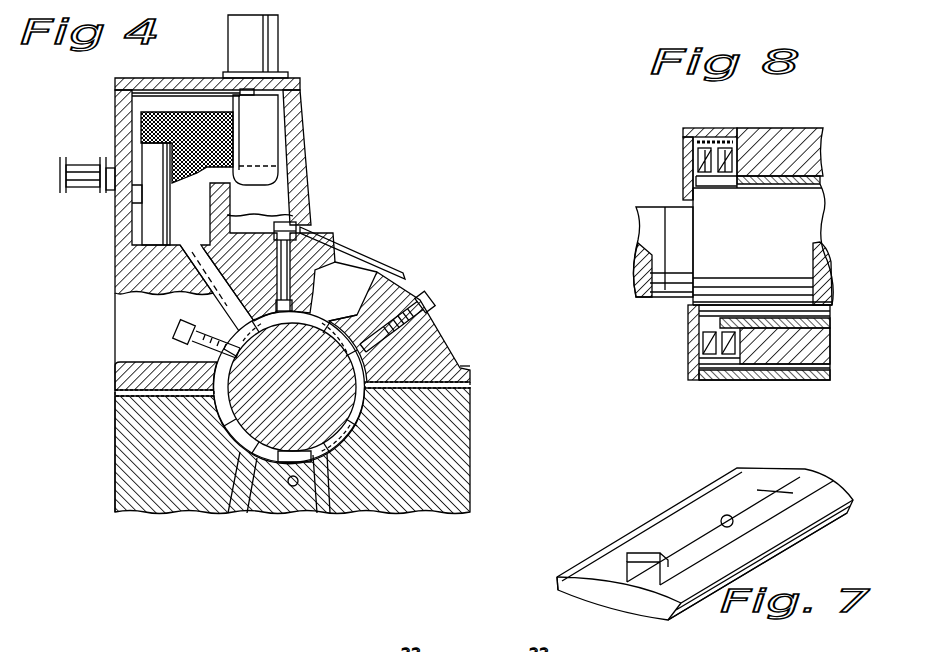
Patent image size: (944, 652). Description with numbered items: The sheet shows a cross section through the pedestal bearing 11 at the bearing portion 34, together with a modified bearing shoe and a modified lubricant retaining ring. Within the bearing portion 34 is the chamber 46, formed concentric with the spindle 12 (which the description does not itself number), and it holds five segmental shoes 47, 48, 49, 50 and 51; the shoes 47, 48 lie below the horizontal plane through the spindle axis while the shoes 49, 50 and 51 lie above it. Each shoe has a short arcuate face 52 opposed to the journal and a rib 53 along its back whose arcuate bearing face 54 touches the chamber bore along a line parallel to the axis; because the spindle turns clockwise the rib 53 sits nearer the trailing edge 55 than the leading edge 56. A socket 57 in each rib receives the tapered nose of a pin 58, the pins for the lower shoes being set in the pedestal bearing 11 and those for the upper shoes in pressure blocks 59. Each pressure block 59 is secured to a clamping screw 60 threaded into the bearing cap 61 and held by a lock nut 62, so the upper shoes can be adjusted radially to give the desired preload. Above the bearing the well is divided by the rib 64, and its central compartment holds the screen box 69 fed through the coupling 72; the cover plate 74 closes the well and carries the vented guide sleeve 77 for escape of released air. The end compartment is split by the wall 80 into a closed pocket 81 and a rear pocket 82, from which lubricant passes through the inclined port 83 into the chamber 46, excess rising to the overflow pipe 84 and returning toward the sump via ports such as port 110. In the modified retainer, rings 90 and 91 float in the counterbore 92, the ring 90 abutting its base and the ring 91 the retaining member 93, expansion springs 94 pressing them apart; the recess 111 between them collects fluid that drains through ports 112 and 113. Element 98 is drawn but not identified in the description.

In FIG. 4, the pedestal bearing 11 is at (468, 431).
In FIG. 4, the shaft 12 is at (318, 520).
In FIG. 4, the chamber 46 is at (372, 376).
In FIG. 4, the segmental shoe 47 is at (247, 518).
In FIG. 4, the segmental shoe 48 is at (332, 516).
In FIG. 4, the segmental shoe 49 is at (353, 291).
In FIG. 4, the segmental shoe 50 is at (315, 273).
In FIG. 4, the segmental shoe 51 is at (212, 366).
In FIG. 7, the arcuate face 52 is at (640, 610).
In FIG. 7, the rib 53 is at (748, 486).
In FIG. 7, the arcuate bearing face 54 is at (645, 558).
In FIG. 7, the trailing edge 55 is at (668, 626).
In FIG. 7, the leading edge 56 is at (566, 588).
In FIG. 7, the socket 57 is at (740, 532).
In FIG. 4, the pin 58 is at (228, 516).
In FIG. 4, the pressure block 59 is at (372, 350).
In FIG. 4, the clamping screw 60 is at (436, 303).
In FIG. 4, the bearing cap 61 is at (470, 375).
In FIG. 4, the lock nut 62 is at (400, 289).
In FIG. 4, the rib 64 is at (240, 164).
In FIG. 4, the screen box 69 is at (141, 120).
In FIG. 4, the coupling 72 is at (106, 166).
In FIG. 4, the cover plate 74 is at (301, 82).
In FIG. 4, the guide sleeve 77 is at (282, 56).
In FIG. 4, the wall 80 is at (231, 208).
In FIG. 4, the pocket 81 is at (304, 188).
In FIG. 4, the pocket 82 is at (160, 230).
In FIG. 4, the inclined port 83 is at (138, 266).
In FIG. 4, the overflow pipe 84 is at (132, 208).
In FIG. 4, the plunger 98 is at (264, 142).
In FIG. 8, the circular ring 90 is at (739, 174).
In FIG. 8, the circular ring 91 is at (693, 183).
In FIG. 8, the counterbore 92 is at (737, 140).
In FIG. 8, the retaining member 93 is at (690, 192).
In FIG. 8, the bearing portion 34 is at (824, 201).
In FIG. 8, the expansion spring 94 is at (700, 353).
In FIG. 4, the port 110 is at (293, 487).
In FIG. 8, the recess 111 is at (690, 326).
In FIG. 8, the port 112 is at (725, 378).
In FIG. 8, the port 113 is at (775, 370).